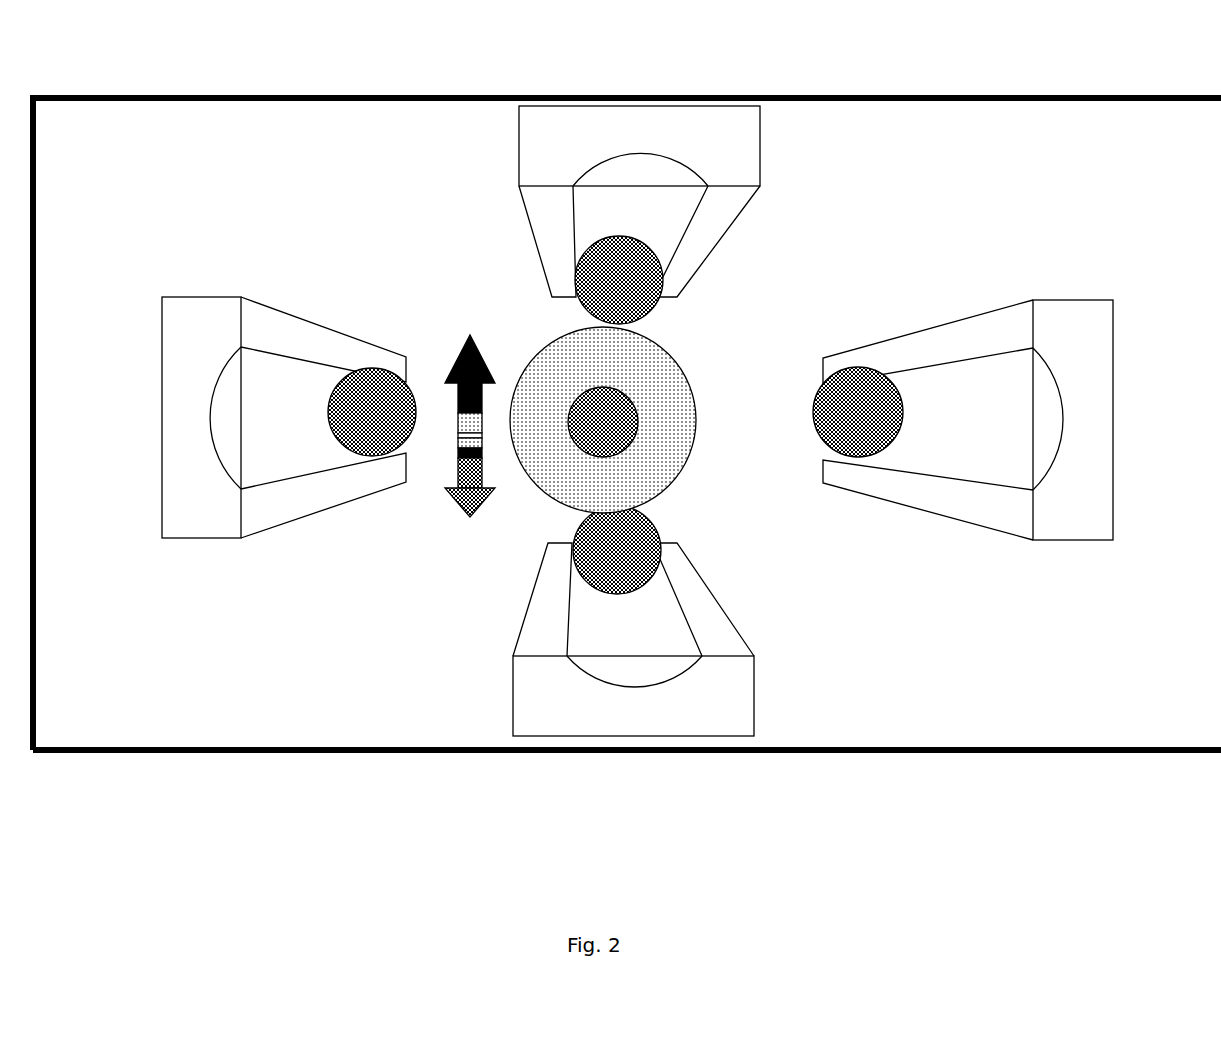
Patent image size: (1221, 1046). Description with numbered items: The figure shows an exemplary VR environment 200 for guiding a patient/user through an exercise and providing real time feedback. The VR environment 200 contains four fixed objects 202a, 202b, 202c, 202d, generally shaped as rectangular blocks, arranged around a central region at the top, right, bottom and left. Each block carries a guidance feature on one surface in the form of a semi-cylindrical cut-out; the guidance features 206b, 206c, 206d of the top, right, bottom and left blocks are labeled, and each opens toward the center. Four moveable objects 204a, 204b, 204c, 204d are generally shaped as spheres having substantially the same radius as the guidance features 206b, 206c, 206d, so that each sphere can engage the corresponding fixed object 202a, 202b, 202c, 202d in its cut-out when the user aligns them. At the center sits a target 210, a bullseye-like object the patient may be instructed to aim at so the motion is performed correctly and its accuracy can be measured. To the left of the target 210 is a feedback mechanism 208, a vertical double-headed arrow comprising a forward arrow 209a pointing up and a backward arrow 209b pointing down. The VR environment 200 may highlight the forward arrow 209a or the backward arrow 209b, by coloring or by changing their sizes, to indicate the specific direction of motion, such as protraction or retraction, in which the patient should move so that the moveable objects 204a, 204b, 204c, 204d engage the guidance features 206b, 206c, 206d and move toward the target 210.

The VR environment 200 is at (102, 86).
The fixed object 202a is at (657, 129).
The fixed object 202b is at (1017, 312).
The fixed object 202c is at (762, 701).
The fixed object 202d is at (286, 308).
The moveable object 204a is at (659, 311).
The moveable object 204b is at (864, 368).
The moveable object 204c is at (668, 558).
The moveable object 204d is at (383, 382).
The guidance feature 206b is at (647, 203).
The guidance feature 206c is at (665, 643).
The guidance feature 206d is at (261, 456).
The feedback mechanism 208 is at (465, 441).
The forward arrow 209a is at (490, 330).
The backward arrow 209b is at (467, 510).
The target 210 is at (670, 446).